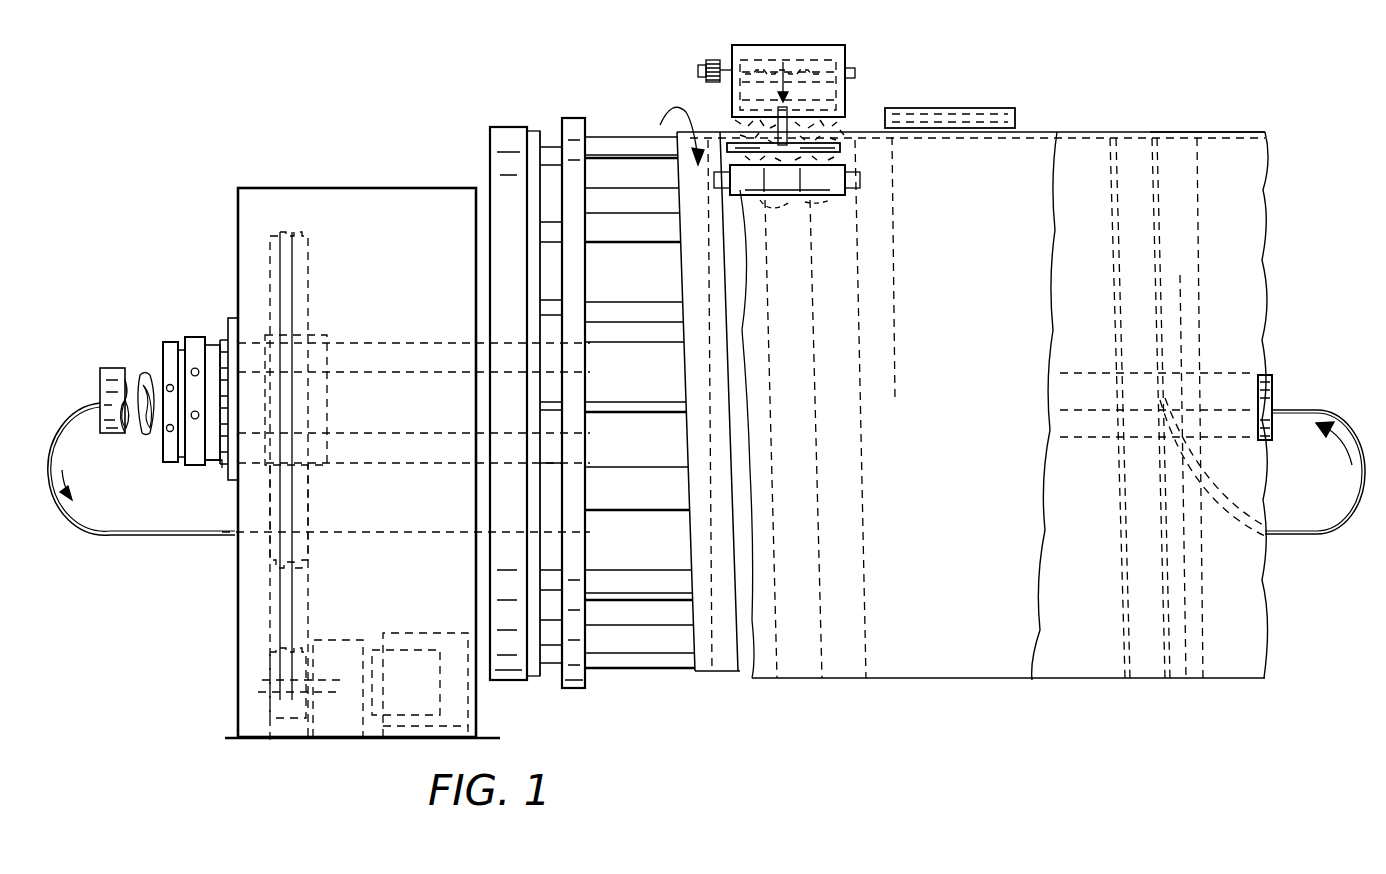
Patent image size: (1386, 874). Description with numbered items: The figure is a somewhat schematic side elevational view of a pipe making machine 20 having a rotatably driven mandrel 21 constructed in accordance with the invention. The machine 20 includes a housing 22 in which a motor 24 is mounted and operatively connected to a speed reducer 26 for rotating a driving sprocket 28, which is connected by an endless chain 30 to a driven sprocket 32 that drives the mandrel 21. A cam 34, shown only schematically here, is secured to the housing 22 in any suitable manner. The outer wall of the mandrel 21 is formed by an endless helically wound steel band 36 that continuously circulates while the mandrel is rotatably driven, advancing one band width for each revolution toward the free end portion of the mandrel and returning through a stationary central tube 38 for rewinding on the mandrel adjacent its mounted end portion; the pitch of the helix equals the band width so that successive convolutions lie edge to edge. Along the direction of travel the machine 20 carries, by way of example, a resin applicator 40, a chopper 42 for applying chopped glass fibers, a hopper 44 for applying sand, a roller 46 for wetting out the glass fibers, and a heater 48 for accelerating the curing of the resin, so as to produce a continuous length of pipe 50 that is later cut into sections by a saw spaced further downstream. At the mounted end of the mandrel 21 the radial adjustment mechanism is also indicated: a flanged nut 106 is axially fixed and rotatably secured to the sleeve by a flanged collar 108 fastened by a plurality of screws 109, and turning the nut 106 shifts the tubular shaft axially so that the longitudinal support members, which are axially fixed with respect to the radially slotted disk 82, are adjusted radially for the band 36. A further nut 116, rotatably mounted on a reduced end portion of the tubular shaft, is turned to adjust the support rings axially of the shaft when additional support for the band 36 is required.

The pipe making machine 20 is at (322, 162).
The mandrel 21 is at (1155, 112).
The housing 22 is at (237, 188).
The motor 24 is at (465, 632).
The speed reducer 26 is at (360, 638).
The driving sprocket 28 is at (268, 713).
The endless chain 30 is at (293, 592).
The driven sprocket 32 is at (300, 233).
The cam 34 is at (490, 128).
The endless helically wound steel band 36 is at (1280, 406).
The stationary central tube 38 is at (108, 368).
The resin applicator 40 is at (840, 142).
The chopper 42 is at (706, 62).
The hopper 44 is at (845, 48).
The roller 46 is at (838, 190).
The heater 48 is at (978, 108).
The continuous length of pipe 50 is at (1265, 133).
The radially slotted disk 82 is at (565, 118).
The flanged nut 106 is at (194, 337).
The flanged collar 108 is at (222, 345).
The screws 109 is at (222, 464).
The nut 116 is at (168, 342).